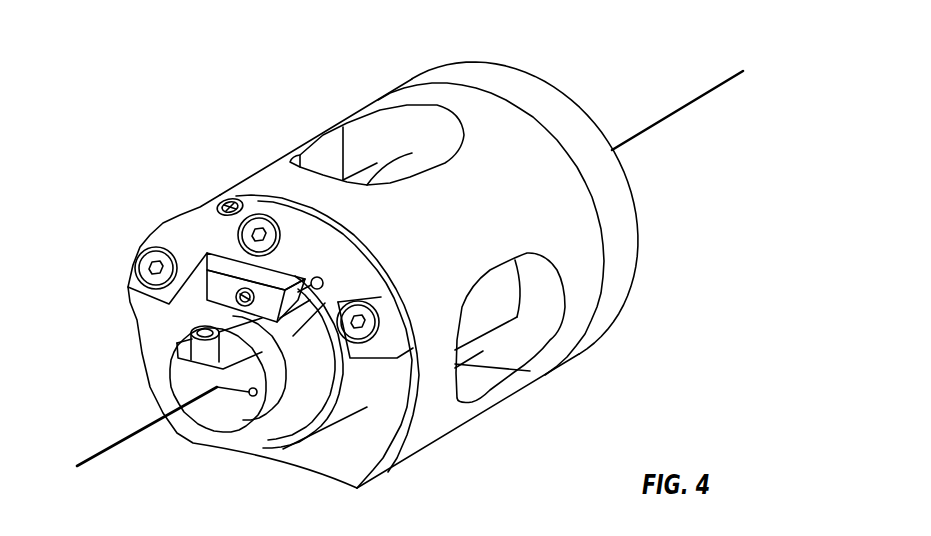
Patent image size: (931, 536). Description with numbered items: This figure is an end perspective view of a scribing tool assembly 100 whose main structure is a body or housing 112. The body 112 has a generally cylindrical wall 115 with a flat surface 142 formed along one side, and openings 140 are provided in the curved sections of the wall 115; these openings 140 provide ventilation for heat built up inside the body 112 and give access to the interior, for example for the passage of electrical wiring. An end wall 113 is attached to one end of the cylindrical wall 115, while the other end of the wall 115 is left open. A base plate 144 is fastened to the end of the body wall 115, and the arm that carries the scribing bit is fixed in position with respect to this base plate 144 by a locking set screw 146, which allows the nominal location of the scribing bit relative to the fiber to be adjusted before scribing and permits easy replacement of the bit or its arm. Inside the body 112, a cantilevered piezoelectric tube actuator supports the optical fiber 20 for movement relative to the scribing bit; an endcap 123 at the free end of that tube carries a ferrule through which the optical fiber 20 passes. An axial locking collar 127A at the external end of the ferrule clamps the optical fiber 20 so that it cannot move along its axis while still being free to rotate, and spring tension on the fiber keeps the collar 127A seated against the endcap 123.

The fiber holder assembly 100 is at (259, 86).
The body or housing 112 is at (462, 52).
The end wall 113 is at (619, 279).
The cylindrical wall 115 is at (437, 430).
The openings 140 is at (507, 357).
The flat surface 142 is at (340, 488).
The base plate 144 is at (181, 231).
The locking set screw 146 is at (236, 298).
The endcap 123 is at (277, 432).
The axial locking collar 127A is at (218, 425).
The optical fiber 20 is at (123, 437).